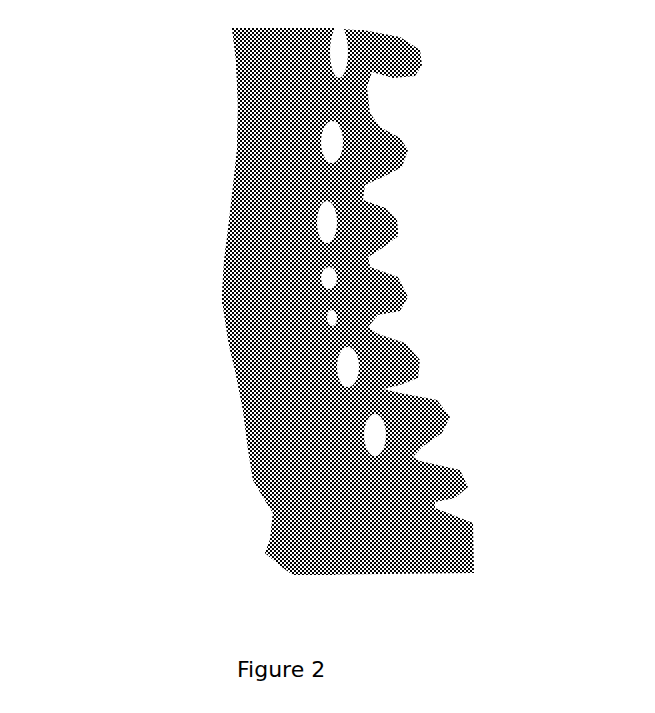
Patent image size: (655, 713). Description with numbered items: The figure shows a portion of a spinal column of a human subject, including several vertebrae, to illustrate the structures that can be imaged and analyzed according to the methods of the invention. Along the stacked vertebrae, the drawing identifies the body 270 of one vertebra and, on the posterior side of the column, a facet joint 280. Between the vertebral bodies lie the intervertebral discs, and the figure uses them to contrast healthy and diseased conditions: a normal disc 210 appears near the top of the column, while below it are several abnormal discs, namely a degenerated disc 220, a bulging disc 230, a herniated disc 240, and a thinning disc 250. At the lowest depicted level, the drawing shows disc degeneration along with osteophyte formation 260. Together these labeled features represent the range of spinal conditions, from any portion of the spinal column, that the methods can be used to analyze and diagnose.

The normal disc 210 is at (233, 62).
The degenerated disc 220 is at (233, 145).
The bulging disc 230 is at (225, 228).
The herniated disc 240 is at (231, 315).
The thinning disc 250 is at (262, 392).
The disc degeneration with osteophyte formation 260 is at (287, 543).
The body 270 is at (262, 276).
The facet joint 280 is at (352, 238).